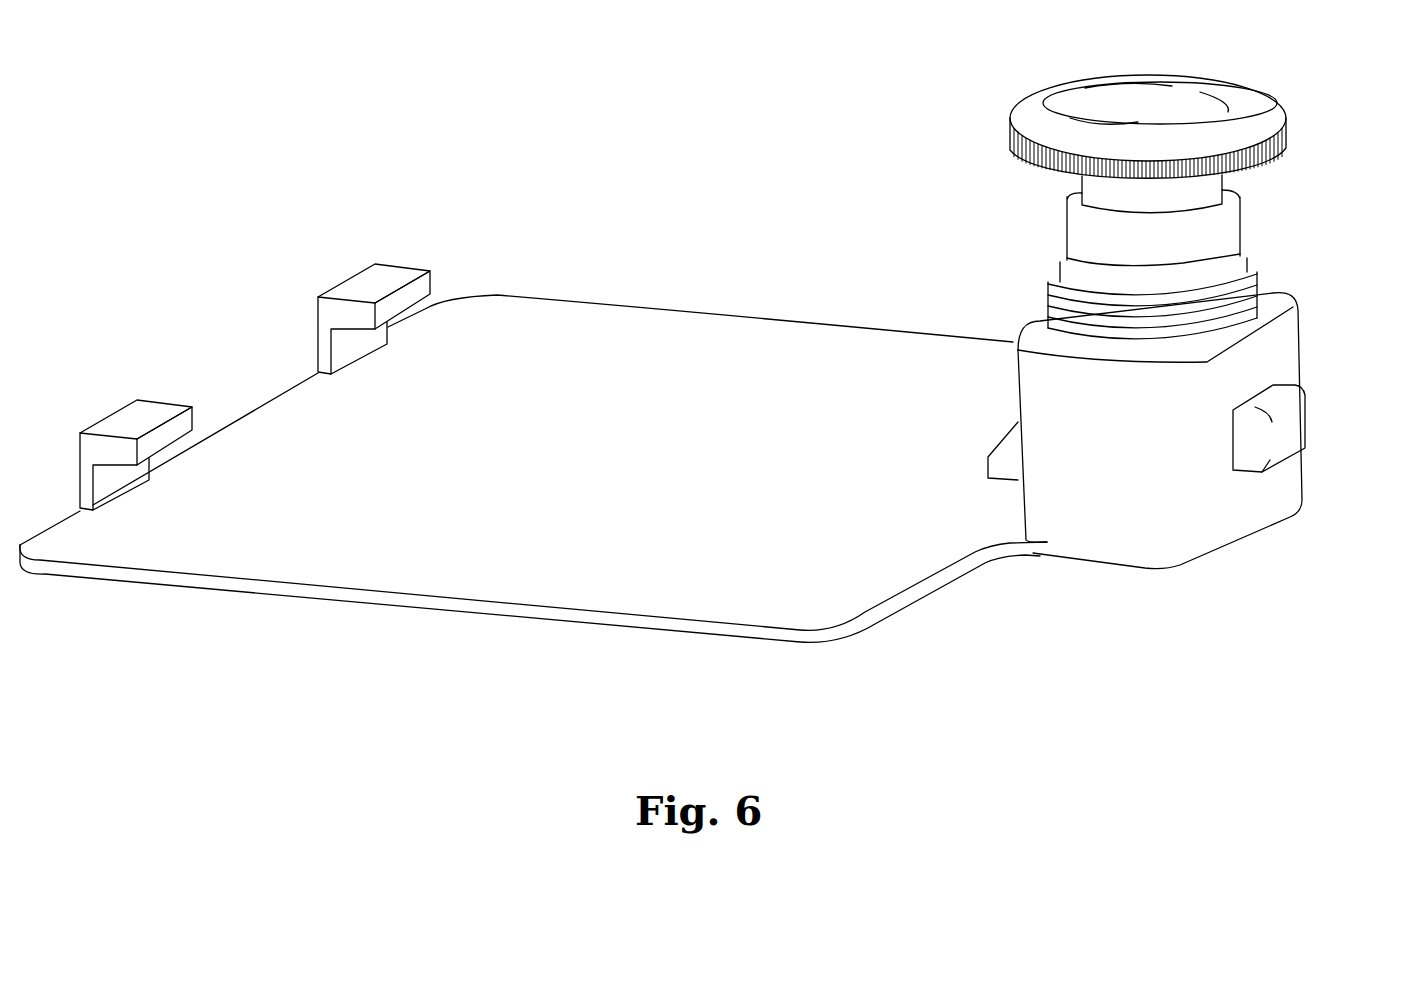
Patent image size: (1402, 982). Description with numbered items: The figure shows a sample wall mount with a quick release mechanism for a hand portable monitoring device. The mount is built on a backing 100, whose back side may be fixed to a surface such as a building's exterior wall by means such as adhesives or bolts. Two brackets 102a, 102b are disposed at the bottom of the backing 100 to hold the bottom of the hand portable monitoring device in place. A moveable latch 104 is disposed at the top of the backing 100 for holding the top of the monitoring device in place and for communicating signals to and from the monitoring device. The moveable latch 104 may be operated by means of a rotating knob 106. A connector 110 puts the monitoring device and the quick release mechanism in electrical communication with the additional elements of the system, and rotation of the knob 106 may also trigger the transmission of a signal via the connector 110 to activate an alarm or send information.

The backing 100 is at (597, 425).
The bracket 102a is at (368, 280).
The bracket 102b is at (113, 423).
The moveable latch 104 is at (1001, 464).
The rotating knob 106 is at (1238, 122).
The connector 110 is at (1275, 432).